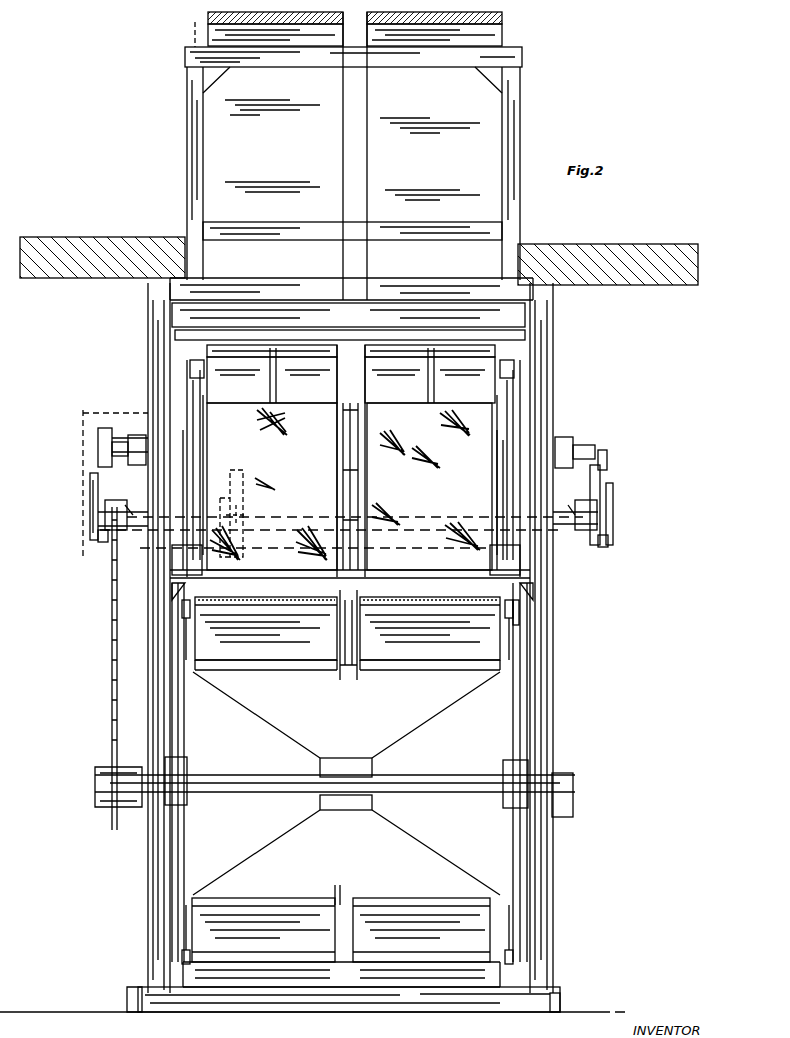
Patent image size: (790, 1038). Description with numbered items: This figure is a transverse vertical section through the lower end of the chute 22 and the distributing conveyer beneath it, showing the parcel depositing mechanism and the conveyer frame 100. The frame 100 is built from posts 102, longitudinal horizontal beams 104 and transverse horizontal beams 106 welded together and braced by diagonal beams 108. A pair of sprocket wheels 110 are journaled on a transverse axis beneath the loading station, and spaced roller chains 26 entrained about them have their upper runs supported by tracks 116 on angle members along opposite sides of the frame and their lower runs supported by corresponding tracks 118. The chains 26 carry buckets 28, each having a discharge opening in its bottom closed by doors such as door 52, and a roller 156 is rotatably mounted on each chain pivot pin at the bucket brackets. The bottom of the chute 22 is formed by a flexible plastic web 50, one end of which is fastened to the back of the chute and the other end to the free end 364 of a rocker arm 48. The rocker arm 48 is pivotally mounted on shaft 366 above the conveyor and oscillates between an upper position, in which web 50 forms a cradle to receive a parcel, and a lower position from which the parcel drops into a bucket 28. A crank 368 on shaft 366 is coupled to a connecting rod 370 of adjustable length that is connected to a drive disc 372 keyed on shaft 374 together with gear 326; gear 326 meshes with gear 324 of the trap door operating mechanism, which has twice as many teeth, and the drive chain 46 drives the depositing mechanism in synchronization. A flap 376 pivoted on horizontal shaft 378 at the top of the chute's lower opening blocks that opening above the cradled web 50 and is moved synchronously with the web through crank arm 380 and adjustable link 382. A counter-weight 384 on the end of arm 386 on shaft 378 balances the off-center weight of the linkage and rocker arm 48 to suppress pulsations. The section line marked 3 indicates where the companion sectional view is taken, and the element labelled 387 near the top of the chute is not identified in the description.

The hopper trays 387 is at (330, 33).
The chute 22 is at (320, 162).
The section line 3- 3 is at (181, 32).
The posts 102 is at (152, 370).
The counter-weight 384 is at (530, 320).
The arm 386 is at (525, 337).
The horizontal shaft 378 is at (528, 355).
The crank arm 380 is at (515, 373).
The flexible web 50 is at (308, 484).
The flap 376 is at (378, 398).
The link 382 is at (200, 423).
The shaft 366 is at (205, 442).
The rocker arm 48 is at (188, 468).
The gear 326 is at (243, 476).
The gear 324 is at (250, 508).
The crank 368 is at (98, 453).
The connecting rod 370 is at (90, 488).
The shaft 374 is at (135, 492).
The drive disc 372 is at (100, 542).
The free end 364 is at (505, 565).
The longitudinal horizontal beams 104 is at (560, 583).
The drive chain 46 is at (112, 622).
The sprocket wheels 110 is at (184, 732).
The tracks 116 is at (190, 625).
The door 52 is at (350, 672).
The bucket 28 is at (330, 688).
The roller chains 26 is at (172, 612).
The roller 156 is at (525, 612).
The diagonal beams 108 is at (355, 727).
The tracks 118 is at (200, 950).
The transverse horizontal beams 106 is at (255, 1005).
The frame 100 is at (560, 993).